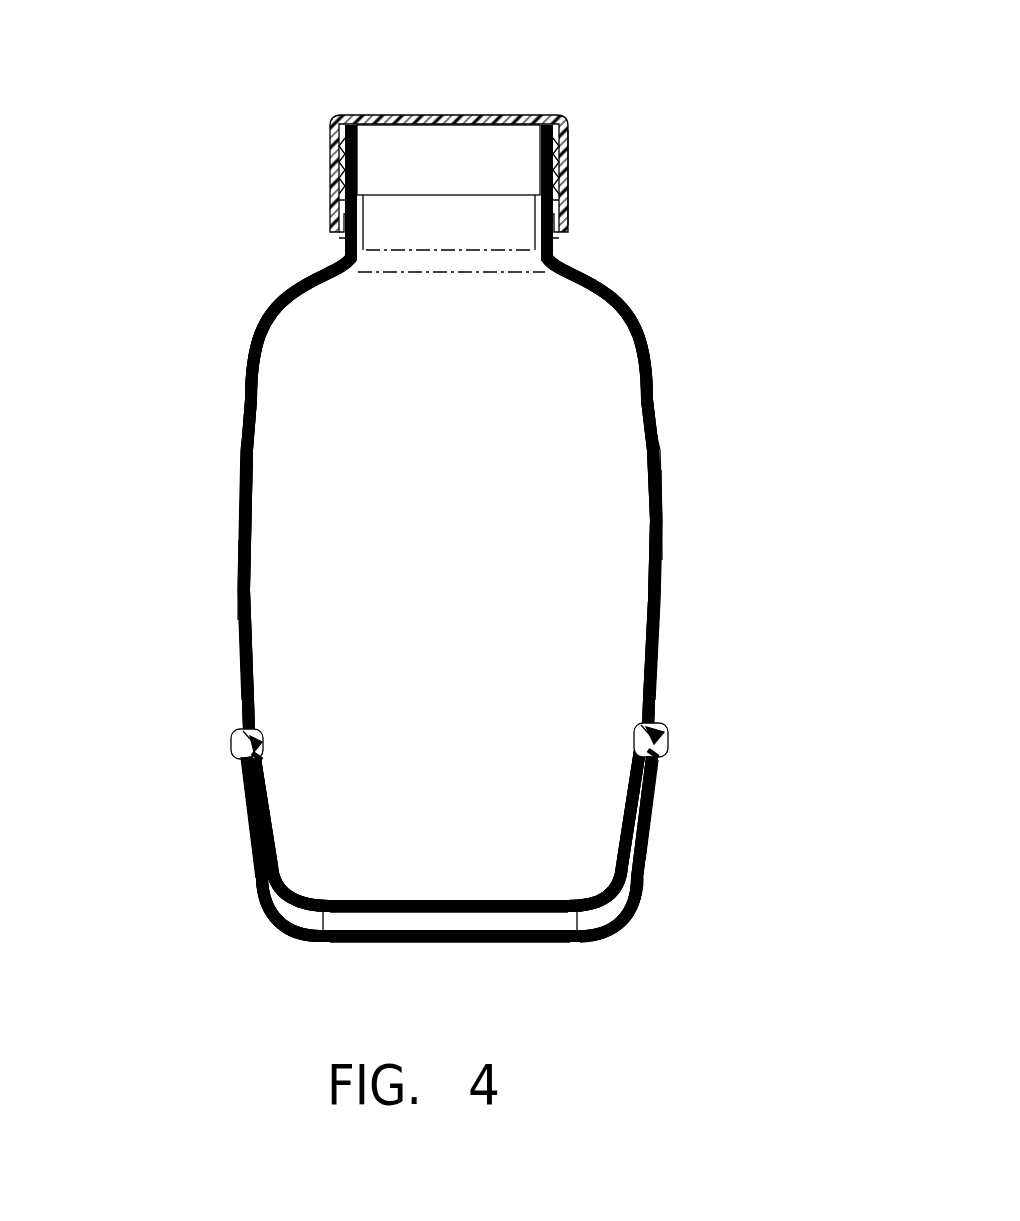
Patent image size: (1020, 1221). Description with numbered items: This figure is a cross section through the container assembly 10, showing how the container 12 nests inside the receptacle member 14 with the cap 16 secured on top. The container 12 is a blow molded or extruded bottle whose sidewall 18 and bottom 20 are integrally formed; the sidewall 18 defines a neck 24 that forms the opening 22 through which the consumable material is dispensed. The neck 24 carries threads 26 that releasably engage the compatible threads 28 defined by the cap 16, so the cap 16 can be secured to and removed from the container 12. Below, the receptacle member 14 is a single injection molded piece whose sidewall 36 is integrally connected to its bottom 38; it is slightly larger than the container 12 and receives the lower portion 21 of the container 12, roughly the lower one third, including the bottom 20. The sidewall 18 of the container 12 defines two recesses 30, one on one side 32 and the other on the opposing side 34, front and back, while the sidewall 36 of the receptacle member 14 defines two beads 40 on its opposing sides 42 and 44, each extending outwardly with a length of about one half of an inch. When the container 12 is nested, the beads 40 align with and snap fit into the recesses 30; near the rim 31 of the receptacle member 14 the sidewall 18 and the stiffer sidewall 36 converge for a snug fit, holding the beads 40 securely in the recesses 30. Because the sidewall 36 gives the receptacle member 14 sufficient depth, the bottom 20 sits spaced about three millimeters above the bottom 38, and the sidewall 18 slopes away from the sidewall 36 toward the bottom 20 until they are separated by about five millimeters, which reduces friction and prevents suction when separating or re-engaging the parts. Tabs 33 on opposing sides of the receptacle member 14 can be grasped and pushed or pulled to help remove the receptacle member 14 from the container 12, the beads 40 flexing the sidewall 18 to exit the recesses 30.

The container assembly 10 is at (435, 496).
The container 12 is at (467, 551).
The receptacle member 14 is at (410, 871).
The cap 16 is at (454, 162).
The sidewall 18 is at (245, 447).
The bottom 20 is at (513, 913).
The lower portion 21 is at (614, 808).
The opening 22 is at (467, 283).
The neck 24 is at (330, 218).
The threads 26 is at (553, 160).
The threads 28 is at (569, 143).
The recess 30 is at (442, 735).
The rim 31 is at (254, 750).
The tab 33 is at (240, 738).
The side 32 is at (664, 517).
The opposing side 34 is at (237, 585).
The sidewall 36 is at (652, 797).
The bottom 38 is at (428, 944).
The bead 40 is at (257, 758).
The side 42 is at (647, 880).
The opposing side 44 is at (242, 812).